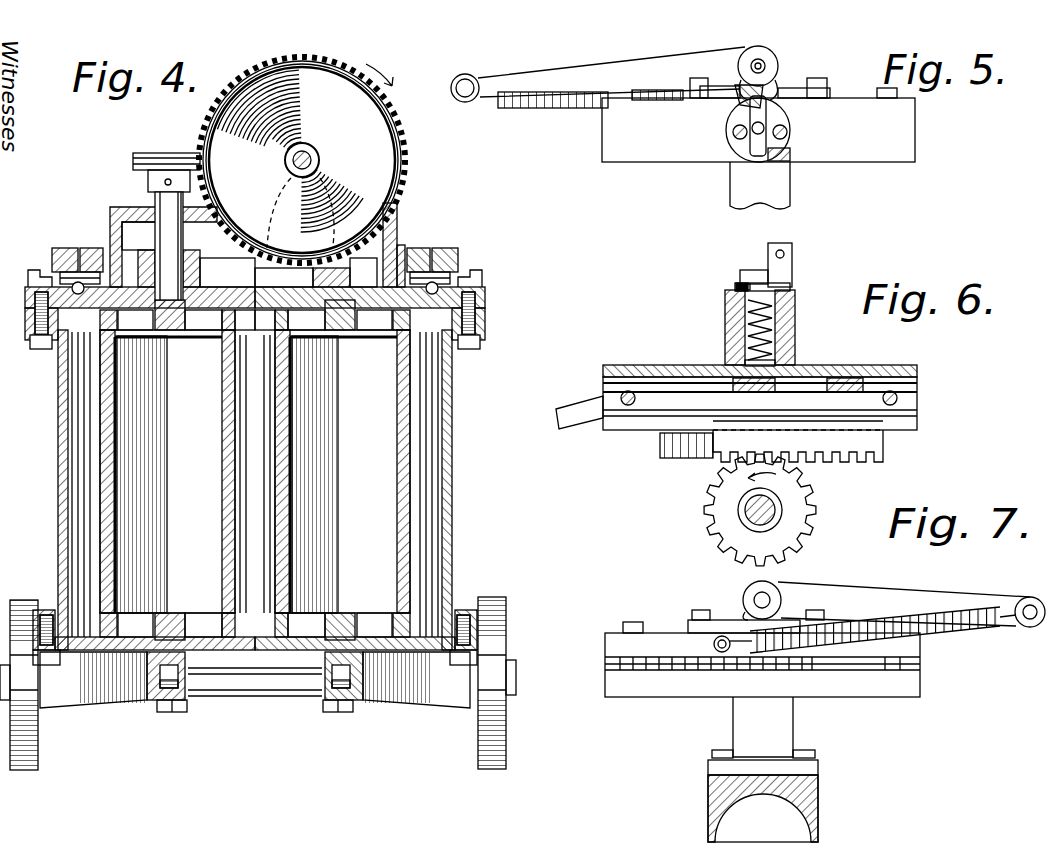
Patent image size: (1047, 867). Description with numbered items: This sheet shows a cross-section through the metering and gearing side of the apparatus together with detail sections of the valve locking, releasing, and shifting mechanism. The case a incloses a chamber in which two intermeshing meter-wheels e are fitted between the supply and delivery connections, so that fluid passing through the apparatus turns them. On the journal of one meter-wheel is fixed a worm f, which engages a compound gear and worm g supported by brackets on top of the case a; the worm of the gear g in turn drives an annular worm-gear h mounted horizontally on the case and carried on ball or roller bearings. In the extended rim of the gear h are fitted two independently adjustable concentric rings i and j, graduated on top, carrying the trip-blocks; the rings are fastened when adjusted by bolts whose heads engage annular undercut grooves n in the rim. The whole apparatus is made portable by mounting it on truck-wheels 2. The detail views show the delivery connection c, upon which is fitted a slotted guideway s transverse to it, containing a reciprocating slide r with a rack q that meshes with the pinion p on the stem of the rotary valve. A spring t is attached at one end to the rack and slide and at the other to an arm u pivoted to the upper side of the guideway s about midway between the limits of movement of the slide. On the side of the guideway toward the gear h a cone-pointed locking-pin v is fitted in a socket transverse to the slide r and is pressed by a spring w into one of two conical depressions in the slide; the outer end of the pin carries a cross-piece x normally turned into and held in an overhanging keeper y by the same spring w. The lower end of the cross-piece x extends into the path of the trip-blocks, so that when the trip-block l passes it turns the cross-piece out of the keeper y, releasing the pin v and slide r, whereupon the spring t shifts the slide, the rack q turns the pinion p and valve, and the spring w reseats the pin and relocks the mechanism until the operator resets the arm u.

In FIG. 4, the case a is at (255, 485).
In FIG. 4, the meter-wheels e is at (255, 471).
In FIG. 4, the worm f is at (168, 156).
In FIG. 4, the compound gear and worm g is at (302, 160).
In FIG. 4, the annular worm-gear h is at (122, 207).
In FIG. 4, the concentric ring i is at (68, 249).
In FIG. 4, the concentric ring j is at (92, 249).
In FIG. 4, the annular undercut grooves n is at (52, 264).
In FIG. 4, the truck-wheels 2 is at (258, 669).
In FIG. 5, the arm u is at (614, 74).
In FIG. 6, the arm u is at (576, 408).
In FIG. 7, the arm u is at (893, 592).
In FIG. 5, the spring t is at (568, 108).
In FIG. 6, the spring t is at (690, 458).
In FIG. 7, the spring t is at (865, 639).
In FIG. 5, the slotted guideway s is at (758, 143).
In FIG. 6, the slotted guideway s is at (642, 365).
In FIG. 7, the slotted guideway s is at (656, 634).
In FIG. 5, the cross-piece x is at (752, 106).
In FIG. 6, the cross-piece x is at (738, 285).
In FIG. 5, the overhanging keeper y is at (740, 86).
In FIG. 6, the overhanging keeper y is at (754, 268).
In FIG. 5, the trip-block l is at (792, 150).
In FIG. 6, the trip-block l is at (795, 278).
In FIG. 6, the locking-pin v is at (728, 338).
In FIG. 6, the spring w is at (795, 338).
In FIG. 6, the reciprocating slide r is at (759, 391).
In FIG. 7, the reciprocating slide r is at (847, 665).
In FIG. 6, the rack q is at (800, 416).
In FIG. 7, the rack q is at (685, 672).
In FIG. 6, the pinion p is at (760, 510).
In FIG. 7, the delivery connection c is at (763, 801).